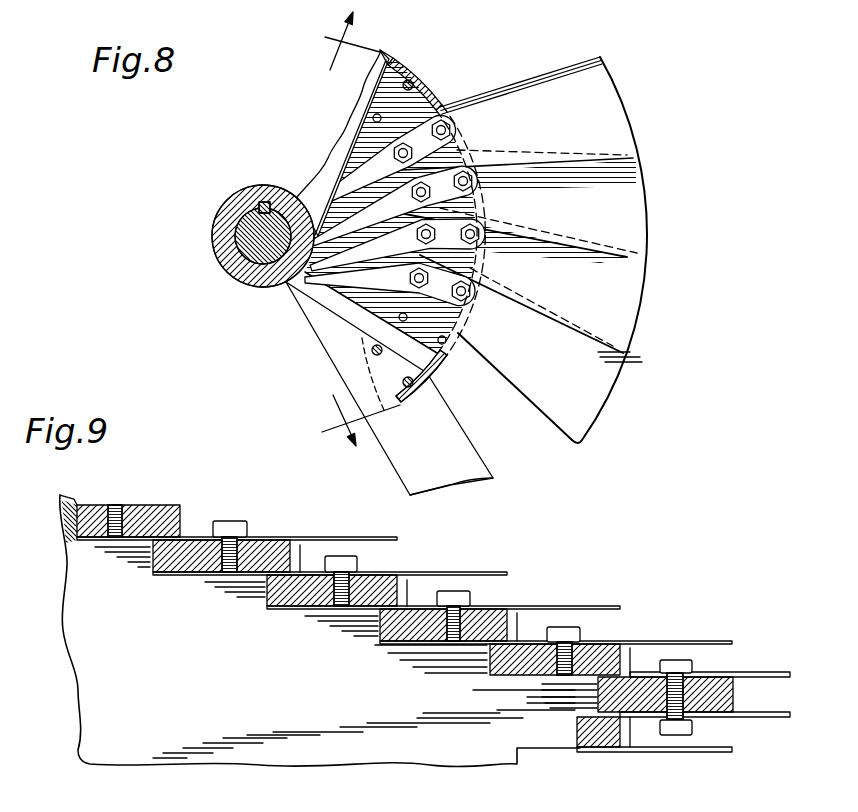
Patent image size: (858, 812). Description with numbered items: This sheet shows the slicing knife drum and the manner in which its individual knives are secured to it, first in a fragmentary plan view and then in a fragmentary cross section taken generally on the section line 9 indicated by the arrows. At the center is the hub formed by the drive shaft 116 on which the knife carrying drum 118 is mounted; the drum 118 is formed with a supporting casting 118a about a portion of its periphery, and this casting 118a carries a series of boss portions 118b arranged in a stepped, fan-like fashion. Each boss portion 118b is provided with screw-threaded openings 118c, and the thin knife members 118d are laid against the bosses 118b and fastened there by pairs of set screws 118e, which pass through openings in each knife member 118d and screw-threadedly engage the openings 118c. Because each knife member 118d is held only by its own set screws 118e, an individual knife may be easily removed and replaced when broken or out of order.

In FIG. 8, the drive shaft 116 is at (268, 222).
In FIG. 8, the knife carrying drum 118 is at (402, 53).
In FIG. 9, the knife carrying drum 118 is at (72, 687).
In FIG. 8, the supporting casting 118a is at (333, 126).
In FIG. 9, the supporting casting 118a is at (361, 614).
In FIG. 8, the boss portions 118b is at (333, 297).
In FIG. 9, the boss portions 118b is at (207, 567).
In FIG. 8, the screw-threaded openings 118c is at (380, 116).
In FIG. 9, the screw-threaded openings 118c is at (115, 505).
In FIG. 8, the knife members 118d is at (618, 150).
In FIG. 9, the knife members 118d is at (558, 603).
In FIG. 8, the set screws 118e is at (475, 290).
In FIG. 9, the set screws 118e is at (343, 558).
In FIG. 8, the section line 9— 9 is at (348, 232).